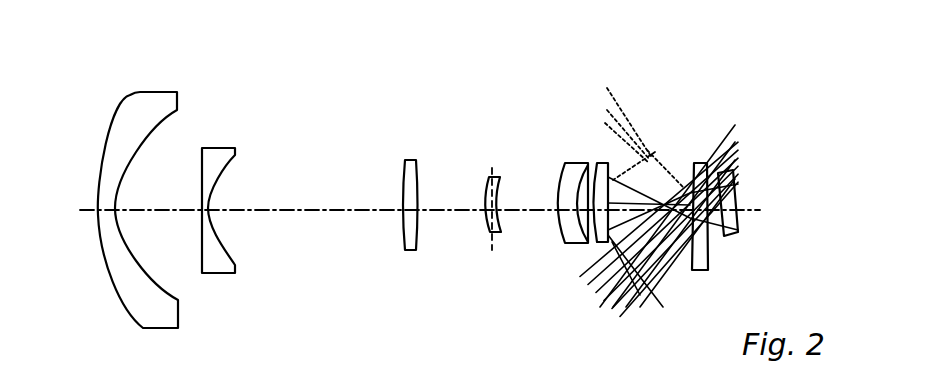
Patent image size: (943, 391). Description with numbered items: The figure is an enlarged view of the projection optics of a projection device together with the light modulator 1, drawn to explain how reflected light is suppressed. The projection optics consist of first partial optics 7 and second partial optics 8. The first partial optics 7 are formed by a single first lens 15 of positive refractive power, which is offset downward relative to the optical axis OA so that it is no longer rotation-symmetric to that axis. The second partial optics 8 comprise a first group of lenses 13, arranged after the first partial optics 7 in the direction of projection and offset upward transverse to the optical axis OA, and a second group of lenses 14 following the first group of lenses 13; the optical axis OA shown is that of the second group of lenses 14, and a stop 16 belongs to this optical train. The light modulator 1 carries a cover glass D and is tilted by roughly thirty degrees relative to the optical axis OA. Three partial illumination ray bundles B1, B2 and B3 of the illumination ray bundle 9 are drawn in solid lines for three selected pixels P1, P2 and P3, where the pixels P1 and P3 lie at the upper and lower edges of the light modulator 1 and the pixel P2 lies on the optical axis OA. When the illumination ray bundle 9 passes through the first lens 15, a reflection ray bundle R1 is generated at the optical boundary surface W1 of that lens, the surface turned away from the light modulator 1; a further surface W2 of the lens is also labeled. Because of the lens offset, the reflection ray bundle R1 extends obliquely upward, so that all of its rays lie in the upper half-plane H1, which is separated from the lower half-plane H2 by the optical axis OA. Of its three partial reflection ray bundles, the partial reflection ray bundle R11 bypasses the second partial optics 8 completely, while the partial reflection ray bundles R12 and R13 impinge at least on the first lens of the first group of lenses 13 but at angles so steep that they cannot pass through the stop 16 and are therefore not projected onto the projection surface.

The light modulator 1 is at (811, 168).
The first partial optics 7 is at (697, 160).
The second partial optics 8 is at (572, 94).
The illumination ray bundle 9 is at (597, 314).
The first group of lenses 13 is at (603, 260).
The second group of lenses 14 is at (258, 325).
The first lens 15 is at (702, 162).
The stop 16 is at (489, 166).
The optical axis OA is at (289, 212).
The upper half-plane H1 is at (337, 170).
The lower half-plane H2 is at (348, 320).
The reflection ray bundle R1 is at (613, 95).
The partial reflection ray bundle R11 is at (628, 116).
The partial reflection ray bundle R12 is at (622, 182).
The partial reflection ray bundle R13 is at (610, 253).
The cover glass D is at (725, 168).
The pixel P1 is at (795, 172).
The pixel P2 is at (738, 203).
The pixel P3 is at (737, 225).
The optical boundary surface W1 is at (693, 268).
The second path W2 is at (720, 258).
The partial illumination ray bundle B1 is at (623, 287).
The partial illumination ray bundle B2 is at (680, 273).
The partial illumination ray bundle B3 is at (662, 270).